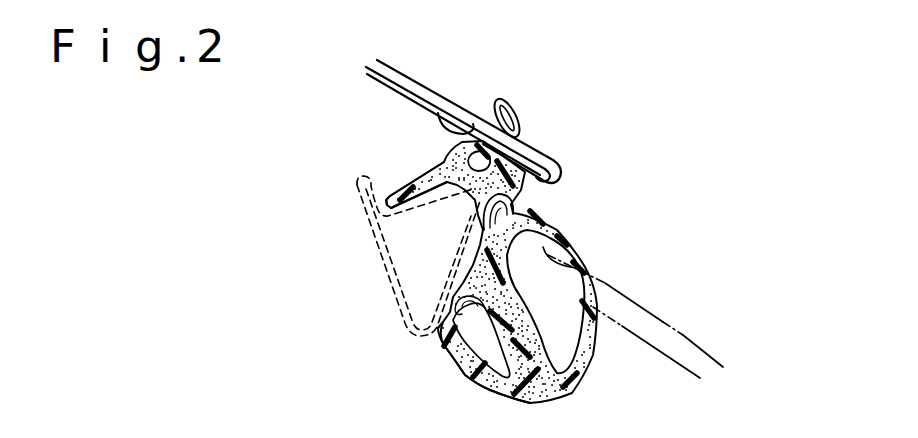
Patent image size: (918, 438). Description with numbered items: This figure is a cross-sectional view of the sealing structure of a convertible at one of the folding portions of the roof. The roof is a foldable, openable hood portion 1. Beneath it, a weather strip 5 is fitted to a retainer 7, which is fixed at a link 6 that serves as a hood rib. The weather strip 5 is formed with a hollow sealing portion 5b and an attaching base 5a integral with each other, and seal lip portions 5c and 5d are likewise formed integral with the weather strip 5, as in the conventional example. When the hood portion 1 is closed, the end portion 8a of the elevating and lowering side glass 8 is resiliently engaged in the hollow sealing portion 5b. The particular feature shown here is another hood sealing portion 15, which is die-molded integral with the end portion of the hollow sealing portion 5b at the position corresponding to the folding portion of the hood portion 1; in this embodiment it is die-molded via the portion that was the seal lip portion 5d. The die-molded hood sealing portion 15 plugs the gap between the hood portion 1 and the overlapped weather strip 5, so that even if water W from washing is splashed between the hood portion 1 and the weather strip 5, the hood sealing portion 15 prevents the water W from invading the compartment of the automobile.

The hood portion 1 is at (407, 82).
The weather strip 5 is at (590, 235).
The attaching base 5a is at (483, 241).
The hollow sealing portion 5b is at (597, 330).
The seal lip portion 5c is at (447, 343).
The seal lip portion 5d is at (432, 183).
The link 6 is at (385, 270).
The retainer 7 is at (452, 318).
The side glass 8 is at (687, 335).
The end portion of side glass 8a is at (603, 273).
The hood sealing portion 15 is at (430, 164).
The water W is at (547, 200).